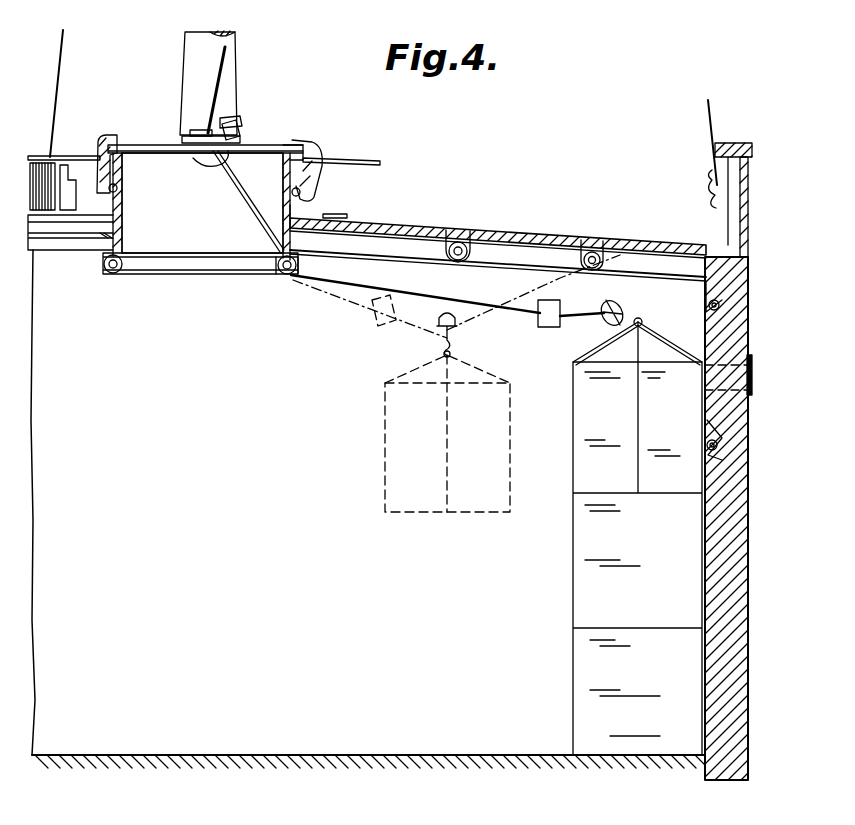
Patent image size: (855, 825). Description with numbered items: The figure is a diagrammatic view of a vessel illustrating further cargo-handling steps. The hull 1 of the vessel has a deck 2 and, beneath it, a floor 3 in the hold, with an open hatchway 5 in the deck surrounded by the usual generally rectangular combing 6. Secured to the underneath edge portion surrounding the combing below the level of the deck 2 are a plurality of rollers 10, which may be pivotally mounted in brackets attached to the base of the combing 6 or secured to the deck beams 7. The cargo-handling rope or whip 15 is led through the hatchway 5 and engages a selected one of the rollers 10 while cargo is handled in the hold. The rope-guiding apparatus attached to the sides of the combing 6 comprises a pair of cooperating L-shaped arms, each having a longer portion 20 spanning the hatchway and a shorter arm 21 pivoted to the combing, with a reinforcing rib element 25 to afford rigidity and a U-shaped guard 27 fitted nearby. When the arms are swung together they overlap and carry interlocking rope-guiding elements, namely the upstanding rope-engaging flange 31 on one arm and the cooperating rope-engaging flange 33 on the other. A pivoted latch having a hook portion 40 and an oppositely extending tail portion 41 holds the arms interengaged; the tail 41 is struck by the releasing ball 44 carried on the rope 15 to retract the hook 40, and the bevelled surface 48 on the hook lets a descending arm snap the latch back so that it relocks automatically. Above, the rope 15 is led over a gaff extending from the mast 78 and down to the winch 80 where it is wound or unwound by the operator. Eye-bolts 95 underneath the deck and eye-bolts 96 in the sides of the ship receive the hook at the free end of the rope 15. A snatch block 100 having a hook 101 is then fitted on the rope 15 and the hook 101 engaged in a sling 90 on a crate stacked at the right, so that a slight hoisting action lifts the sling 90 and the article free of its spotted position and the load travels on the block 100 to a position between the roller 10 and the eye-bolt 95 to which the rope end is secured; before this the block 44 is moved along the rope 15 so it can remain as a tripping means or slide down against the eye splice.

The hull 1 is at (742, 532).
The deck 2 is at (518, 232).
The floor 3 is at (343, 762).
The hatchway 5 is at (182, 255).
The combing 6 is at (292, 212).
The deck beams 7 is at (57, 242).
The rollers 10 is at (107, 272).
The cargo-handling rope 15 is at (62, 64).
The longer arm portion 20 is at (285, 148).
The shorter arm 21 is at (125, 145).
The reinforcing rib element 25 is at (320, 152).
The U-shaped guard 27 is at (360, 160).
The rope-engaging flange 31 is at (222, 134).
The rope-engaging flange 33 is at (196, 132).
The hook portion 40 is at (240, 130).
The tail portion 41 is at (207, 165).
The releasing ball 44 is at (548, 327).
The bevelled surface 48 is at (242, 120).
The mast 78 is at (185, 52).
The winch 80 is at (54, 168).
The sling 90 is at (664, 345).
The eye-bolts 95 is at (458, 242).
The eye-bolts 96 is at (726, 300).
The snatch block 100 is at (606, 306).
The hook 101 is at (640, 320).